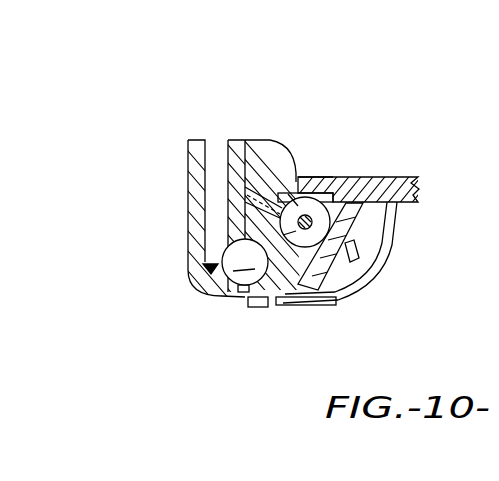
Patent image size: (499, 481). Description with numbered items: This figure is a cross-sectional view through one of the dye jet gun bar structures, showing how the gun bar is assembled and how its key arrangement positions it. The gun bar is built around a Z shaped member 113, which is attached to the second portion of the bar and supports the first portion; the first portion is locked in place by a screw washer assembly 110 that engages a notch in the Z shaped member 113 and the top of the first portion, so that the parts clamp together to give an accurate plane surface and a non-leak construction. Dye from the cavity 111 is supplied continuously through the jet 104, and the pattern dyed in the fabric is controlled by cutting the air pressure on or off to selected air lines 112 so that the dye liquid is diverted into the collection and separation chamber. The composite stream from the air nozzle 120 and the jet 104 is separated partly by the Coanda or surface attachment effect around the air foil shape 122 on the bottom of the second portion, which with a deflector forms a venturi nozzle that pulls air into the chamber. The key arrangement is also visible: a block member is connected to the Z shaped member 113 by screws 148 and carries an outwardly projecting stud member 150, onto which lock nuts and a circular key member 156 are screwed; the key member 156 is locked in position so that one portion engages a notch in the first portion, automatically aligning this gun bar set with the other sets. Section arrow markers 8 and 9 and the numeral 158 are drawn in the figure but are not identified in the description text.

The section line 8- 8 is at (215, 103).
The section line 9- 9 is at (243, 335).
The jet 104 is at (247, 292).
The screw washer assembly 110 is at (352, 239).
The cavity 111 is at (256, 252).
The air lines 112 is at (352, 283).
The Z shaped member 113 is at (420, 187).
The air nozzle 120 is at (272, 305).
The air foil shape 122 is at (205, 288).
The screws 148 is at (445, 474).
The stud member 150 is at (310, 212).
The circular key member 156 is at (302, 238).
The plate edge 158 is at (338, 177).